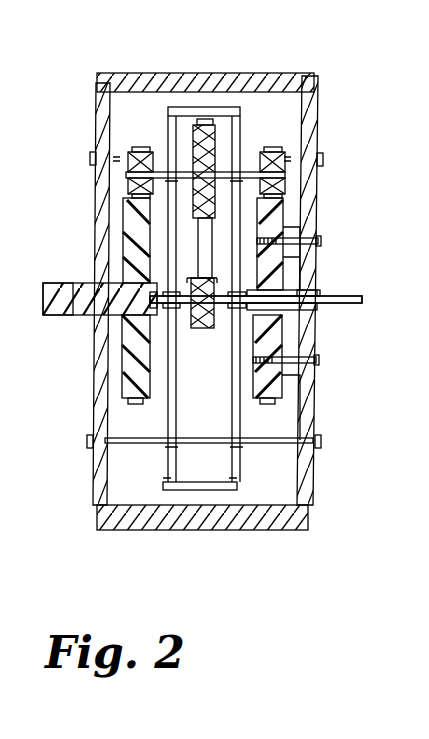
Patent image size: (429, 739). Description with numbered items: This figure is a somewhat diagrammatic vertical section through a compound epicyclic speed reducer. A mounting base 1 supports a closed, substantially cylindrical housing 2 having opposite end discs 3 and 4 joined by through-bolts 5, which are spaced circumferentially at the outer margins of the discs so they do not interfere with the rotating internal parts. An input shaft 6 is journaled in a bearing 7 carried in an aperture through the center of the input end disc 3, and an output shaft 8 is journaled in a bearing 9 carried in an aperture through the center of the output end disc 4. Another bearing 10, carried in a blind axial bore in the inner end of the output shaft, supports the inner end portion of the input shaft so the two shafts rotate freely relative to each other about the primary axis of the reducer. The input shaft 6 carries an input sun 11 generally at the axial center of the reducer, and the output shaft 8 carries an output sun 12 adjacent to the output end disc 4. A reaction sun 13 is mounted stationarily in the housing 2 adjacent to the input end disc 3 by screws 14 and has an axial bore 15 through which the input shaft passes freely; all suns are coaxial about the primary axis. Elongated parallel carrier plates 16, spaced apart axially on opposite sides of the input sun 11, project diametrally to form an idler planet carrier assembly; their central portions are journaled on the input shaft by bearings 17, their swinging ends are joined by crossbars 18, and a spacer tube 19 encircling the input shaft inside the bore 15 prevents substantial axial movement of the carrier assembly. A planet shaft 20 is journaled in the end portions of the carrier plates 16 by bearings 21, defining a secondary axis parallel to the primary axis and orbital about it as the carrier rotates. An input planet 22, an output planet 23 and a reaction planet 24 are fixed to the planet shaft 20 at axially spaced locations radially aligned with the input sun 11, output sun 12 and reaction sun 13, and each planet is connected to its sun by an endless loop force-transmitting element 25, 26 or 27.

The mounting base 1 is at (272, 526).
The housing 2 is at (167, 66).
The input end disc 3 is at (315, 100).
The output end disc 4 is at (100, 91).
The through-bolts 5 is at (323, 158).
The input shaft 6 is at (363, 299).
The bearing 7 is at (317, 310).
The output shaft 8 is at (43, 309).
The bearing 9 is at (90, 282).
The bearing 10 is at (163, 307).
The input sun 11 is at (219, 316).
The output sun 12 is at (132, 374).
The reaction sun 13 is at (280, 390).
The screws 14 is at (321, 240).
The axial bore 15 is at (292, 288).
The carrier plates 16 is at (228, 410).
The bearings 17 is at (200, 274).
The crossbars 18 is at (210, 108).
The spacer tube 19 is at (293, 310).
The planet shaft 20 is at (249, 168).
The bearings 21 is at (227, 163).
The input planet 22 is at (217, 203).
The output planet 23 is at (128, 184).
The reaction planet 24 is at (285, 190).
The endless loop force-transmitting element 25 is at (198, 232).
The endless loop force-transmitting element 26 is at (130, 150).
The endless loop force-transmitting element 27 is at (277, 148).